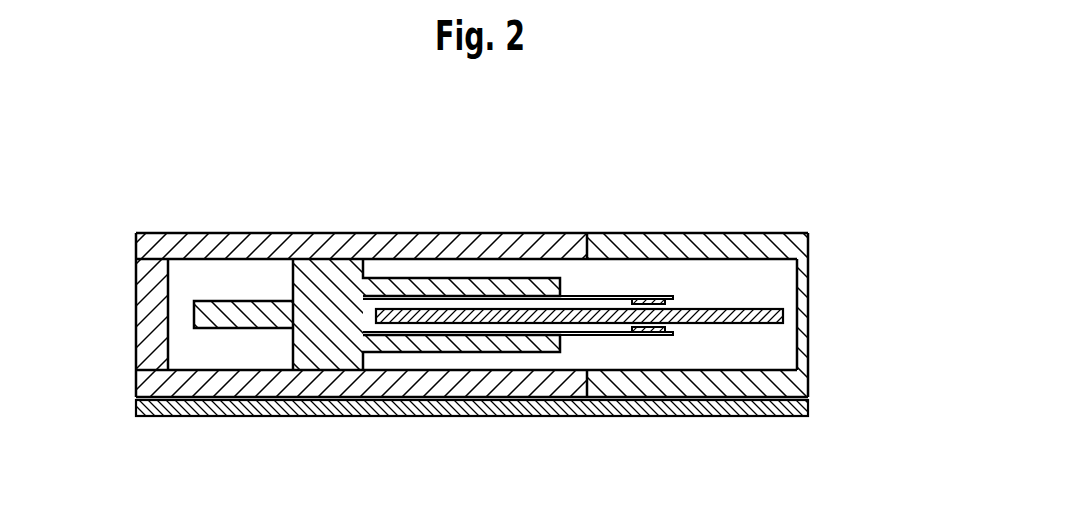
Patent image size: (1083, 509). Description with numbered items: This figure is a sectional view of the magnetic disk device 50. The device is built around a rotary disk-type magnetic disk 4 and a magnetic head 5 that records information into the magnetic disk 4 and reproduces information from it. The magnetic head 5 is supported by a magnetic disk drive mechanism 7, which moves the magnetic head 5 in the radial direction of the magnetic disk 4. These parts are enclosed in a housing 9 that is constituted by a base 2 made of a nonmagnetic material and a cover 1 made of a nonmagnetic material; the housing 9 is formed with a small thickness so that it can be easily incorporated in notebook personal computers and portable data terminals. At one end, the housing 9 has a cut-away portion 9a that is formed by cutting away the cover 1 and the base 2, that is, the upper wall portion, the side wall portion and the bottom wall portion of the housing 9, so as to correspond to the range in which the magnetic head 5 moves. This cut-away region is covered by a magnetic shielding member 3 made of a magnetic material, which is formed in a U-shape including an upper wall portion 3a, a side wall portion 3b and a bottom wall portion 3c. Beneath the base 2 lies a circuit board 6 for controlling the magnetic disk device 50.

The magnetic disk device 50 is at (718, 214).
The cover 1 is at (257, 233).
The base 2 is at (195, 385).
The magnetic shielding member 3 is at (810, 247).
The upper wall portion 3a is at (763, 243).
The side wall portion 3b is at (800, 357).
The bottom wall portion 3c is at (748, 388).
The magnetic disk 4 is at (780, 309).
The magnetic head 5 is at (647, 297).
The circuit board 6 is at (357, 410).
The magnetic disk drive mechanism 7 is at (423, 276).
The housing 9 is at (134, 343).
The cut-away portion 9a is at (589, 397).